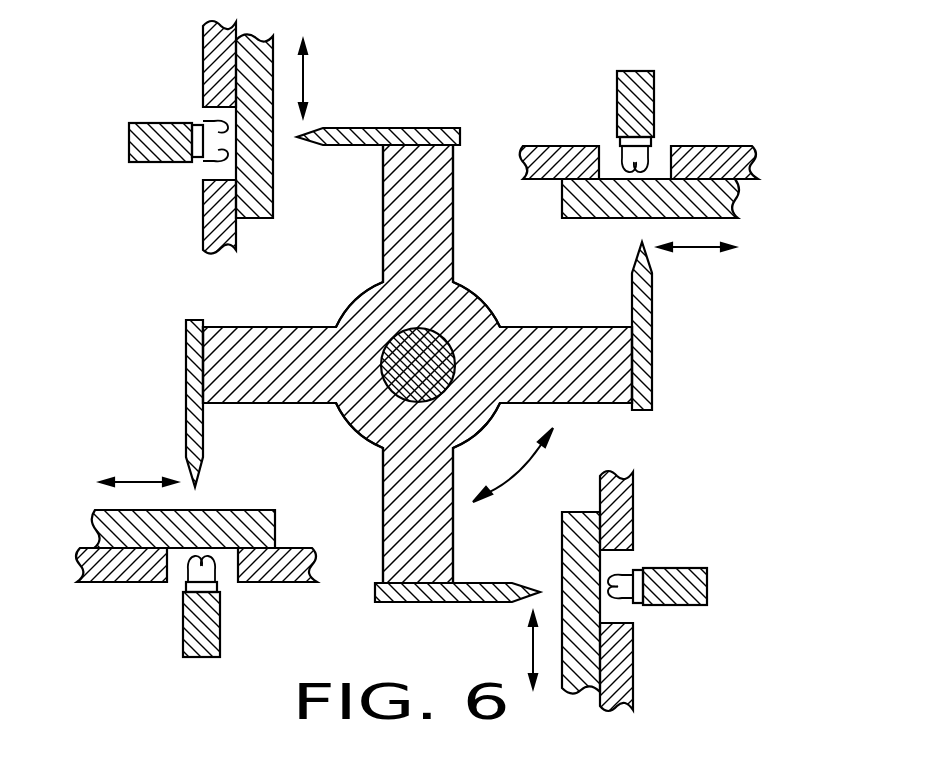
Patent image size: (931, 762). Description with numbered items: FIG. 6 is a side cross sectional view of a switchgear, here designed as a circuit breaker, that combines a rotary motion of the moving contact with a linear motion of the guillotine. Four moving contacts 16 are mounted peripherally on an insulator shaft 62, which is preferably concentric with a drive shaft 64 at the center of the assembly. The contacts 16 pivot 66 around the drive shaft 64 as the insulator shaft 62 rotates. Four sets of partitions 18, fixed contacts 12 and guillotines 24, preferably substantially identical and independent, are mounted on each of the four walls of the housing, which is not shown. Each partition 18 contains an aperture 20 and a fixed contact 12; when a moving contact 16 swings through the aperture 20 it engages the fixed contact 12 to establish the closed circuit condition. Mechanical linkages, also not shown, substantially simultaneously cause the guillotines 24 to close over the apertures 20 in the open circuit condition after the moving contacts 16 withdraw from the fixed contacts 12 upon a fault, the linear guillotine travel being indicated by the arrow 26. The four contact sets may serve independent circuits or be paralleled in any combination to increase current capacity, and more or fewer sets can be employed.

The fixed contact 12 is at (654, 90).
The aperture 20 is at (607, 155).
The partition 18 is at (712, 146).
The guillotine 24 is at (718, 218).
The arrow indicating lateral movement 26 is at (697, 251).
The moving contact 16 is at (652, 340).
The insulator shaft 62 is at (553, 327).
The drive shaft 64 is at (400, 351).
The pivot 66 is at (525, 468).